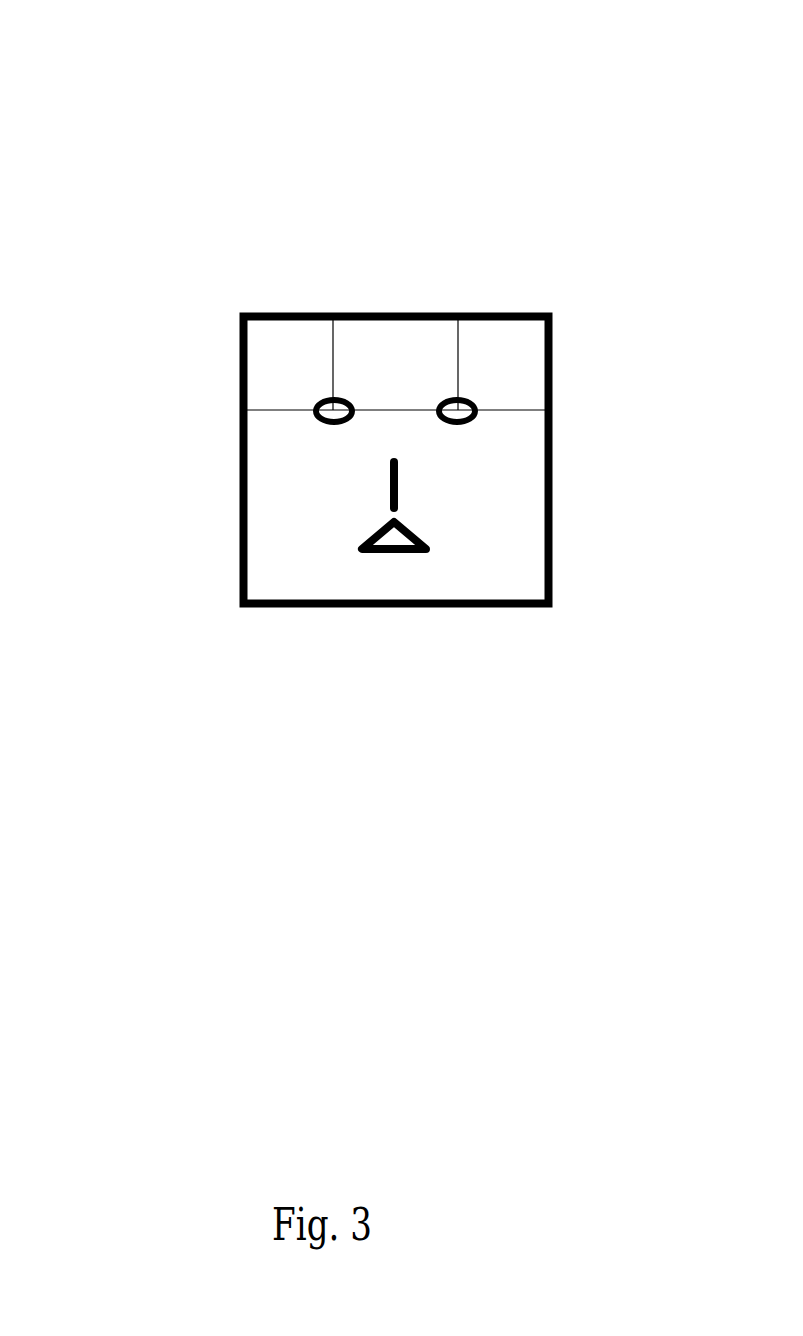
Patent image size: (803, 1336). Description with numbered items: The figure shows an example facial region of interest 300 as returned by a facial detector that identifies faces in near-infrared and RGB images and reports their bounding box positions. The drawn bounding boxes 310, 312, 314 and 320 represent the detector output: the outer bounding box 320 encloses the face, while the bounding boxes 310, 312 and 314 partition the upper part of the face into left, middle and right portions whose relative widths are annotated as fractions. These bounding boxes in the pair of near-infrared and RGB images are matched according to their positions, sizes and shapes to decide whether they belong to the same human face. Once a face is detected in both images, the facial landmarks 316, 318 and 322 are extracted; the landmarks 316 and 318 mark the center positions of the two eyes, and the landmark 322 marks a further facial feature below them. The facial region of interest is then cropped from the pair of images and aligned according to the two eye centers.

The facial region of interest 300 is at (115, 107).
The bounding box 310 is at (283, 312).
The bounding box 312 is at (397, 312).
The bounding box 314 is at (510, 312).
The facial landmark 316 is at (322, 402).
The facial landmark 318 is at (465, 396).
The bounding box 320 is at (553, 560).
The facial landmark 322 is at (395, 558).